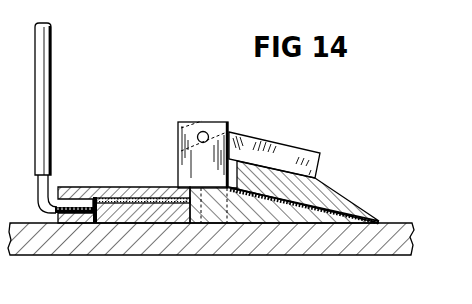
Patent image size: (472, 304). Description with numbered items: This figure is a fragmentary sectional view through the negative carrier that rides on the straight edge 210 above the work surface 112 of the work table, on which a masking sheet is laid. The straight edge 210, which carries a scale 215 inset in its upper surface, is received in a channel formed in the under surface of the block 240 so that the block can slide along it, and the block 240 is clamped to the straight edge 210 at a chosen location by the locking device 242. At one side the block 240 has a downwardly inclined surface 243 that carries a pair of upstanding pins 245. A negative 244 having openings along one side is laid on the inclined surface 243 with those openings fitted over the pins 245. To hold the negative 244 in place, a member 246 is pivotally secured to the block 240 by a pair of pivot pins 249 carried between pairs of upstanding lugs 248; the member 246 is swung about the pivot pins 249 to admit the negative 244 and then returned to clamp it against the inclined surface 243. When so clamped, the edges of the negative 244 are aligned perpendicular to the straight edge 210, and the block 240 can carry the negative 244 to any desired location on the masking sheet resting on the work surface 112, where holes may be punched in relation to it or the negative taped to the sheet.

The work surface 112 is at (272, 238).
The straight edge 210 is at (103, 198).
The scale 215 is at (145, 200).
The block 240 is at (127, 187).
The locking device 242 is at (40, 114).
The inclined surface 243 is at (327, 226).
The negative 244 is at (390, 221).
The upstanding pins 245 is at (282, 162).
The member 246 is at (339, 197).
The upstanding lugs 248 is at (226, 122).
The pivot pins 249 is at (204, 131).